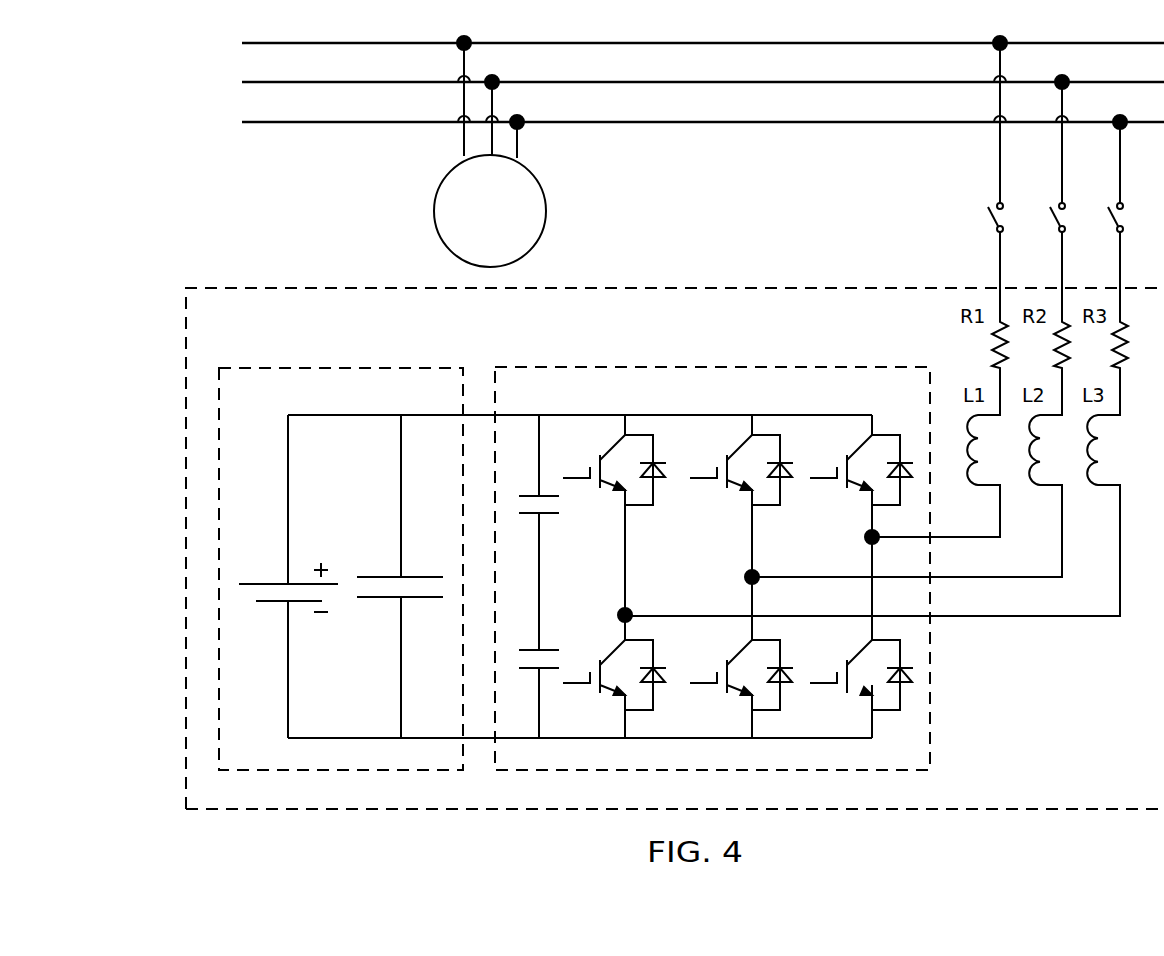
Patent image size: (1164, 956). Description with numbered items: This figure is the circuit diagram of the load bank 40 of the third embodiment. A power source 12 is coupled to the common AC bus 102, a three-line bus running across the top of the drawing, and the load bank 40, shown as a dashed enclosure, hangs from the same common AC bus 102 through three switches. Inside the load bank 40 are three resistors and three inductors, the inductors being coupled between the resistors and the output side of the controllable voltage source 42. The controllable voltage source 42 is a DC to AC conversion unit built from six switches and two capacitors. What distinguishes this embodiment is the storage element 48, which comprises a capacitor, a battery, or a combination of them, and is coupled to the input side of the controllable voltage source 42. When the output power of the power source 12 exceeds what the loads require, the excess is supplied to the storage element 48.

The common AC bus 102 is at (273, 125).
The power source 12 is at (434, 205).
The load bank 40 is at (297, 288).
The storage element 48 is at (325, 368).
The controllable voltage source 42 is at (775, 367).